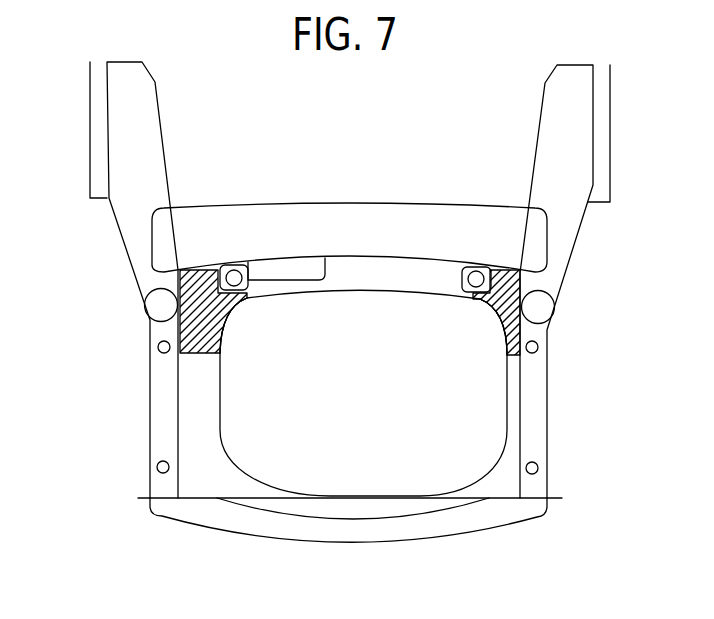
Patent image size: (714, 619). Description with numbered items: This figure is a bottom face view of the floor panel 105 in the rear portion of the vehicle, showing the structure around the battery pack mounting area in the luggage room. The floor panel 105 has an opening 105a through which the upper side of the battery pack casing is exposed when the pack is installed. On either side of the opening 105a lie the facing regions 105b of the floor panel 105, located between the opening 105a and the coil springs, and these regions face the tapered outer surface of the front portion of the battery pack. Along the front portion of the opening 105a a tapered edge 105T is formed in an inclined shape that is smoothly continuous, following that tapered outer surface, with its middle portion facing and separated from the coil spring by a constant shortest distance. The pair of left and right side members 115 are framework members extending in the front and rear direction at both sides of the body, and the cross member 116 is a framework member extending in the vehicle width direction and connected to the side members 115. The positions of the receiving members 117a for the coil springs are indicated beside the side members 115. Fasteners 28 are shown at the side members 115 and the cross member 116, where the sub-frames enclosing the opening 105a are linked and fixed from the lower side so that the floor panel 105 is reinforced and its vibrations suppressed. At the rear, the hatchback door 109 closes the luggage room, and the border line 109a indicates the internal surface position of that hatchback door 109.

The fastener 28 is at (233, 266).
The floor panel 105 is at (205, 413).
The opening 105a is at (447, 449).
The facing region 105b is at (238, 305).
The tapered edge 105T is at (233, 323).
The hatchback door 109 is at (348, 532).
The border line 109a is at (510, 500).
The side member 115 is at (135, 238).
The cross member 116 is at (400, 212).
The receiving member 117a is at (147, 312).